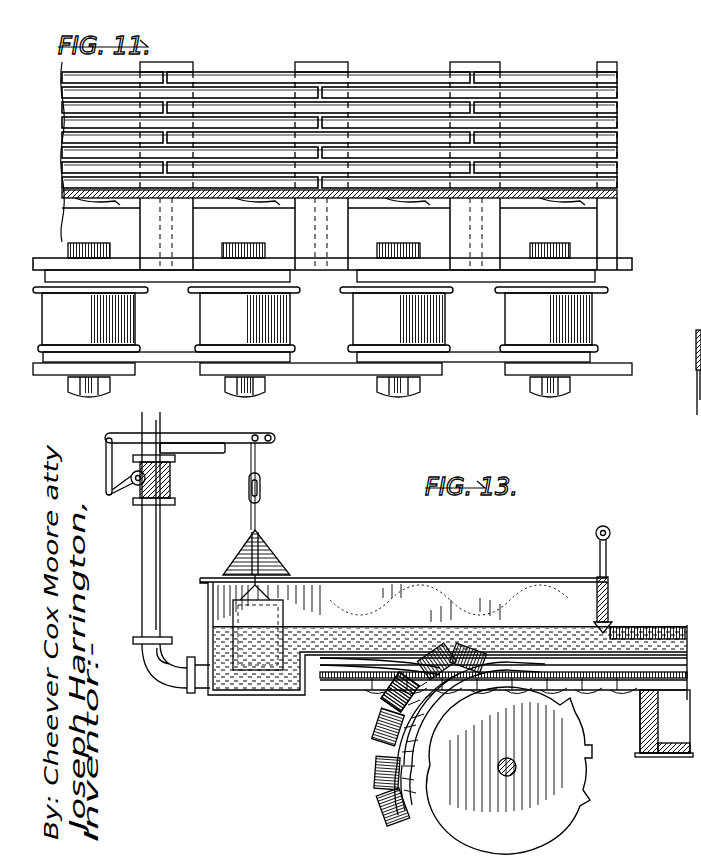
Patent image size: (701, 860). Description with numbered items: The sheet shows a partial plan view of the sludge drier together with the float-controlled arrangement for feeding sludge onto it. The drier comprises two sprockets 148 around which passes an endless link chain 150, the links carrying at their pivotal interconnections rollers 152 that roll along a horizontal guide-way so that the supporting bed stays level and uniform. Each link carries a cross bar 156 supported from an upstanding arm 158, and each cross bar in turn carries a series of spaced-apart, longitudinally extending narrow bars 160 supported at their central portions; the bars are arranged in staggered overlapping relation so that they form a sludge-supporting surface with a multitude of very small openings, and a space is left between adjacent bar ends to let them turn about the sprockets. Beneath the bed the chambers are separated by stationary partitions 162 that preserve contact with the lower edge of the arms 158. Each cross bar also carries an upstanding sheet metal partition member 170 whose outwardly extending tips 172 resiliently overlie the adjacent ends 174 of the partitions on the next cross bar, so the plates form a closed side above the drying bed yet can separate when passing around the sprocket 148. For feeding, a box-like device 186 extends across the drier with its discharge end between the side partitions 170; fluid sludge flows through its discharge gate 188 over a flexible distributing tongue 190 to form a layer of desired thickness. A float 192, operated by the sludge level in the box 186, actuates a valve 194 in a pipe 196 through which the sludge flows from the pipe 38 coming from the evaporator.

In FIG. 13, the pipe 38 is at (150, 413).
In FIG. 13, the sprocket 148 is at (555, 782).
In FIG. 11, the endless link chain 150 is at (350, 357).
In FIG. 11, the rollers 152 is at (205, 316).
In FIG. 11, the cross bar 156 is at (330, 65).
In FIG. 11, the upstanding arm 158 is at (293, 223).
In FIG. 11, the sludge supporting bars 160 is at (486, 152).
In FIG. 13, the partition 162 is at (662, 752).
In FIG. 11, the upstanding partition member 170 is at (489, 200).
In FIG. 13, the upstanding partition member 170 is at (395, 690).
In FIG. 11, the outwardly extending tips 172 is at (578, 203).
In FIG. 11, the adjacent ends 174 is at (552, 188).
In FIG. 13, the box-like device 186 is at (333, 655).
In FIG. 13, the discharge gate 188 is at (608, 553).
In FIG. 13, the flexible distributing tongue 190 is at (624, 690).
In FIG. 13, the float 192 is at (270, 617).
In FIG. 13, the valve 194 is at (152, 505).
In FIG. 13, the pipe 196 is at (160, 520).